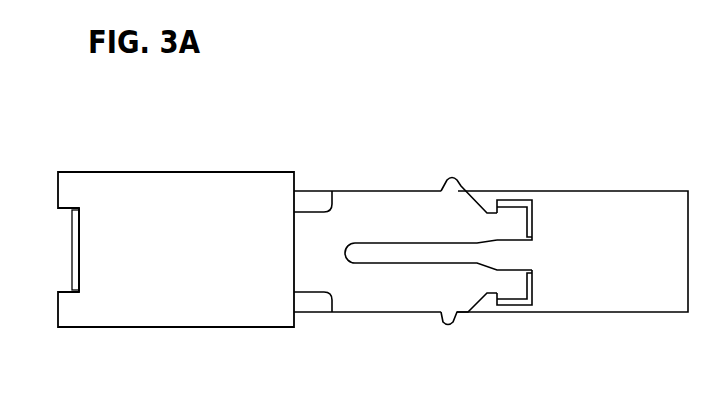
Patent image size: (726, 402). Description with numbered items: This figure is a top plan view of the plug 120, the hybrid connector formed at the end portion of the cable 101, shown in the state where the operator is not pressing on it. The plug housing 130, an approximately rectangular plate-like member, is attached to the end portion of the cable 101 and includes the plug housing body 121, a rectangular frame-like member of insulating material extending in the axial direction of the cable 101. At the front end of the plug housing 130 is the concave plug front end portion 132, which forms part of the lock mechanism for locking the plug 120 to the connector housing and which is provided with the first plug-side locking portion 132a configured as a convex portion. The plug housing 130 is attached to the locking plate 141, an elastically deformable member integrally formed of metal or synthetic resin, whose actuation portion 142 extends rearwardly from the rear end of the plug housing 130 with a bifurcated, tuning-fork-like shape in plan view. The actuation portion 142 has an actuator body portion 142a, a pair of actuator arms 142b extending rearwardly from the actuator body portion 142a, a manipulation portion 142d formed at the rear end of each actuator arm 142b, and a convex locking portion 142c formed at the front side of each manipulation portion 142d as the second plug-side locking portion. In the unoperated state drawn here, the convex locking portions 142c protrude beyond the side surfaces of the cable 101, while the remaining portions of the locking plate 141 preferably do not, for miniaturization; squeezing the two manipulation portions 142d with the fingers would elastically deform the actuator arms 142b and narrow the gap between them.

The plug 120 is at (417, 241).
The cable 101 is at (637, 191).
The plug housing 130 is at (152, 247).
The plug housing body 121 is at (167, 327).
The concave plug front end portion 132 is at (67, 233).
The first plug-side locking portion 132a is at (72, 263).
The locking plate 141 is at (313, 208).
The actuation portion 142 is at (338, 290).
The actuator body portion 142a is at (339, 242).
The actuator arms 142b is at (400, 307).
The convex locking portion 142c is at (452, 178).
The manipulation portion 142d is at (515, 200).